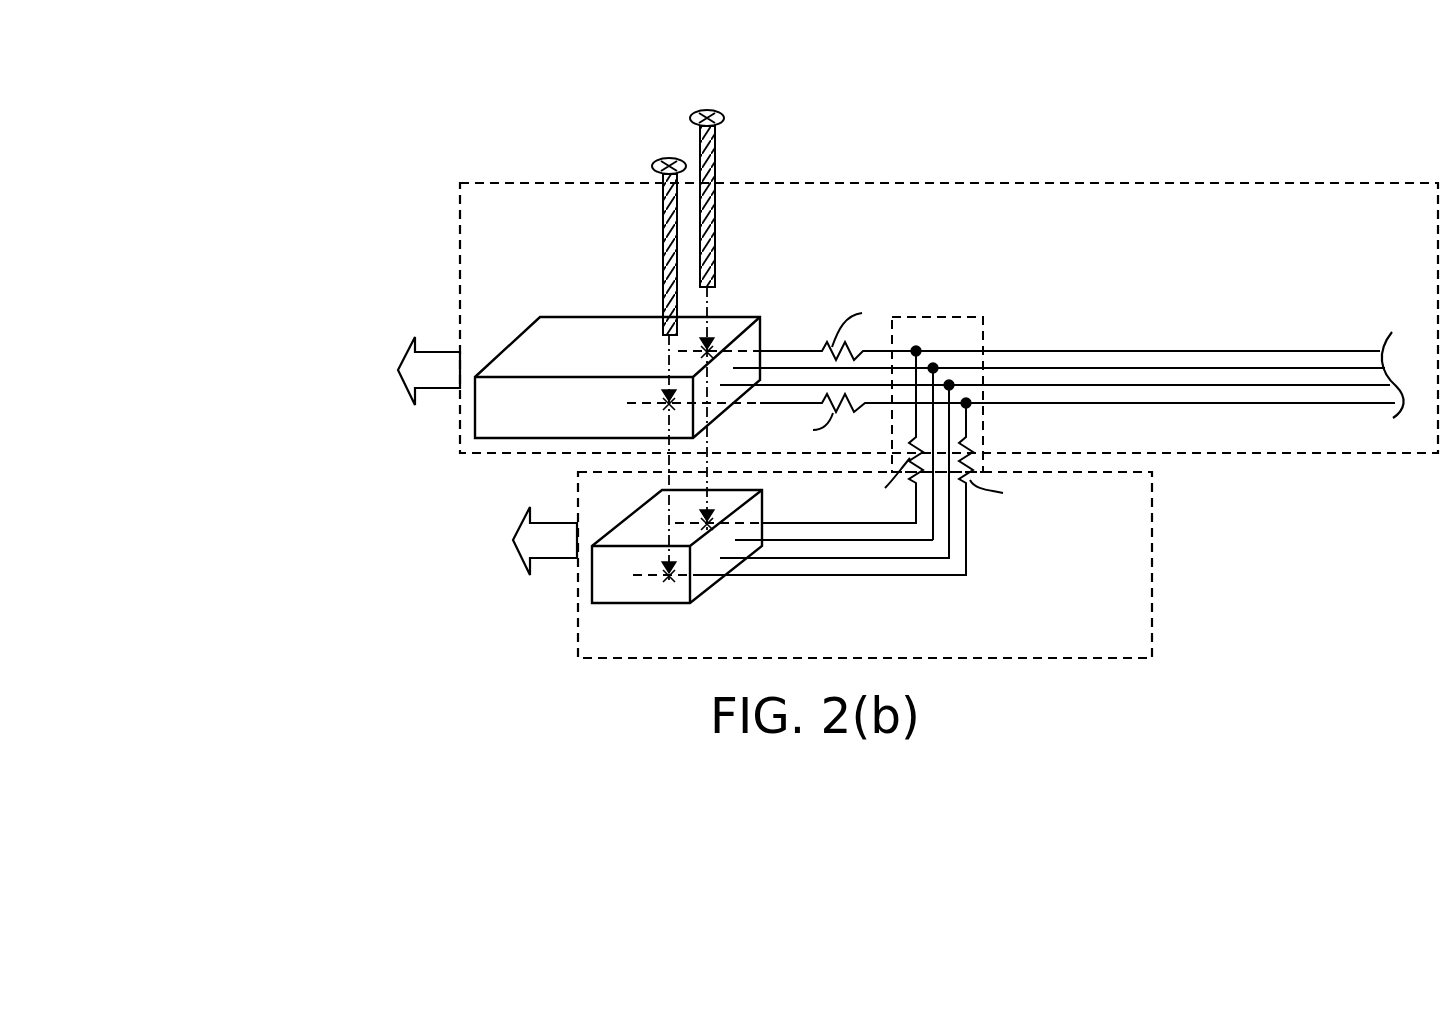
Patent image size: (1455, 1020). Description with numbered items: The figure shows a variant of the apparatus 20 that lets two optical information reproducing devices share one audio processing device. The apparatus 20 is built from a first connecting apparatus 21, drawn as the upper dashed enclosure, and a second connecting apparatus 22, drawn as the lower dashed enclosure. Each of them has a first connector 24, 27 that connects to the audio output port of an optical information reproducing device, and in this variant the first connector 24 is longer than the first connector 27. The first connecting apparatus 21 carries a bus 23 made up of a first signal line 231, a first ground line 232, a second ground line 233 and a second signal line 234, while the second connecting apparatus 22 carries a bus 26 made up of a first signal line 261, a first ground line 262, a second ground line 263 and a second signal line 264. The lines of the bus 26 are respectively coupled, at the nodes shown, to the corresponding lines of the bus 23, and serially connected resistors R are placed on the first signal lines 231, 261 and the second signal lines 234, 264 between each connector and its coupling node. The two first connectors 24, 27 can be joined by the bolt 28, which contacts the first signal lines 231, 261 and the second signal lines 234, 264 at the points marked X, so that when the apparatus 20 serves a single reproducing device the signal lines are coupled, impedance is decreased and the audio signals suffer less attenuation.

The apparatus 20 is at (970, 118).
The first connecting apparatus 21 is at (763, 183).
The second connecting apparatus 22 is at (1168, 553).
The bus 23 is at (1180, 207).
The first signal line 231 is at (1052, 350).
The first ground line 232 is at (1065, 367).
The second ground line 233 is at (1078, 384).
The second signal line 234 is at (1090, 401).
The first connector 24 is at (572, 332).
The bus 26 is at (1076, 502).
The first signal line 261 is at (917, 495).
The first ground line 262 is at (935, 522).
The second ground line 263 is at (952, 545).
The second signal line 264 is at (930, 577).
The first connector 27 is at (660, 593).
The bolt 28 is at (690, 117).